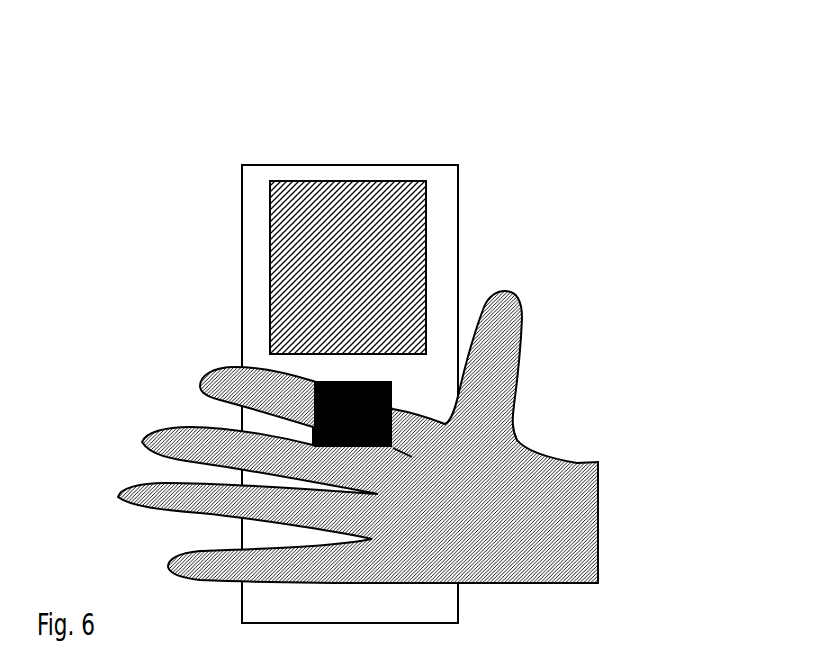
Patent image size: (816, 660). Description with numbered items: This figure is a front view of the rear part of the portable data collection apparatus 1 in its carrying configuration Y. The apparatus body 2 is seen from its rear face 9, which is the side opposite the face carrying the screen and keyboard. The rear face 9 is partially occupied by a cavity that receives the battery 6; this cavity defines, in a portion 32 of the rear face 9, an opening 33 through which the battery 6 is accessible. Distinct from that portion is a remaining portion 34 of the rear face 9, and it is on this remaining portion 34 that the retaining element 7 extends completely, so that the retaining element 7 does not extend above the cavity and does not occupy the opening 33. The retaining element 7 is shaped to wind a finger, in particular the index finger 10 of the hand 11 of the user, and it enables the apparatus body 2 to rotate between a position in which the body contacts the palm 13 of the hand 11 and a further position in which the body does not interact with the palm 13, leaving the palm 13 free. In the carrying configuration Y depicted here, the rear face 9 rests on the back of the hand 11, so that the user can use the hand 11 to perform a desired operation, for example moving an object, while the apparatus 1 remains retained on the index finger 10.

The portable data collection apparatus 1 is at (489, 137).
The apparatus body 2 is at (458, 252).
The battery 6 is at (288, 234).
The retaining element 7 is at (372, 448).
The rear face 9 is at (443, 208).
The index finger 10 is at (223, 384).
The hand 11 is at (577, 502).
The palm 13 is at (435, 497).
The portion of the rear face 32 is at (280, 145).
The opening 33 is at (338, 183).
The remaining portion of the rear face 34 is at (403, 395).
The carrying configuration Y is at (124, 367).